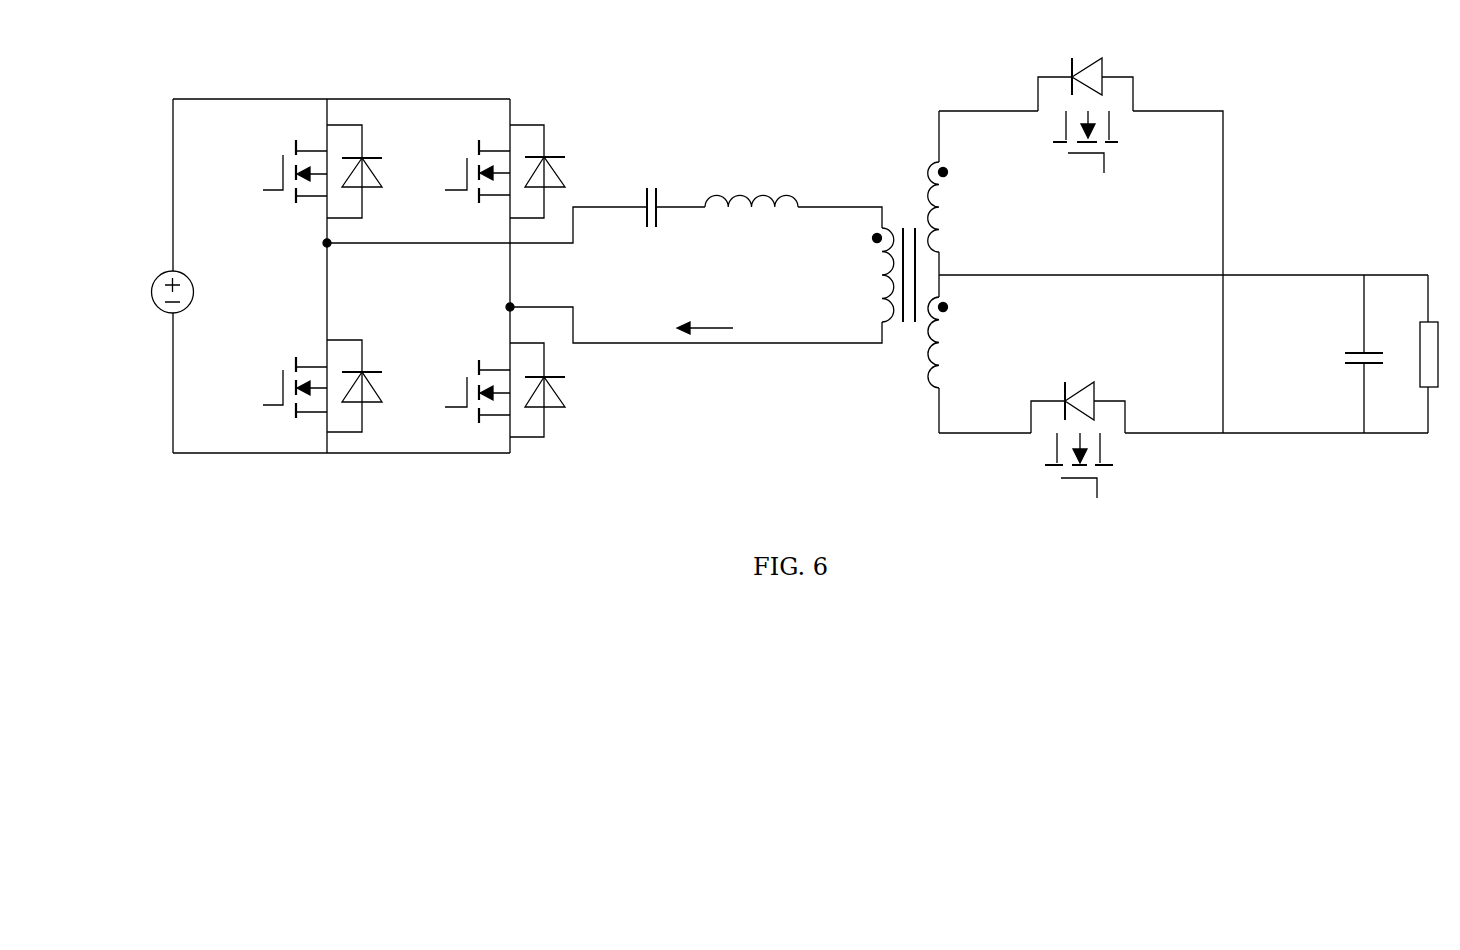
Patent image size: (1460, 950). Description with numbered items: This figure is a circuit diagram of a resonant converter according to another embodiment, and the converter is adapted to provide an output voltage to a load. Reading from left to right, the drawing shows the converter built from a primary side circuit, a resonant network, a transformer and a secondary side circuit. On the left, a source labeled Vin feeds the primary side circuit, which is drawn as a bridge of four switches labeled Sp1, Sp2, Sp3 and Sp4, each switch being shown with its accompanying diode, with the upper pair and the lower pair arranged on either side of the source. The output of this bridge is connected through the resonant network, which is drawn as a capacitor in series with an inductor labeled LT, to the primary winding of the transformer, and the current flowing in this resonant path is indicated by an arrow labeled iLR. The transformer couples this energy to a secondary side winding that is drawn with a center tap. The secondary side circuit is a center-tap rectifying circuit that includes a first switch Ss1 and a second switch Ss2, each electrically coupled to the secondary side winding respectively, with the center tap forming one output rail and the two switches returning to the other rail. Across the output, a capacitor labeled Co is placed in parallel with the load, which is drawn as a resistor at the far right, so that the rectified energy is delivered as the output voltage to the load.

The input voltage source Vin is at (145, 288).
The primary-side switch Sp1 is at (296, 171).
The primary-side switch Sp2 is at (295, 386).
The primary-side switch Sp3 is at (488, 390).
The primary-side switch Sp4 is at (489, 171).
The resonant inductor LT is at (751, 173).
The resonant inductor current iLR is at (739, 315).
The first switch Ss1 is at (1046, 437).
The second switch Ss2 is at (1066, 130).
The output capacitor Co is at (1342, 354).